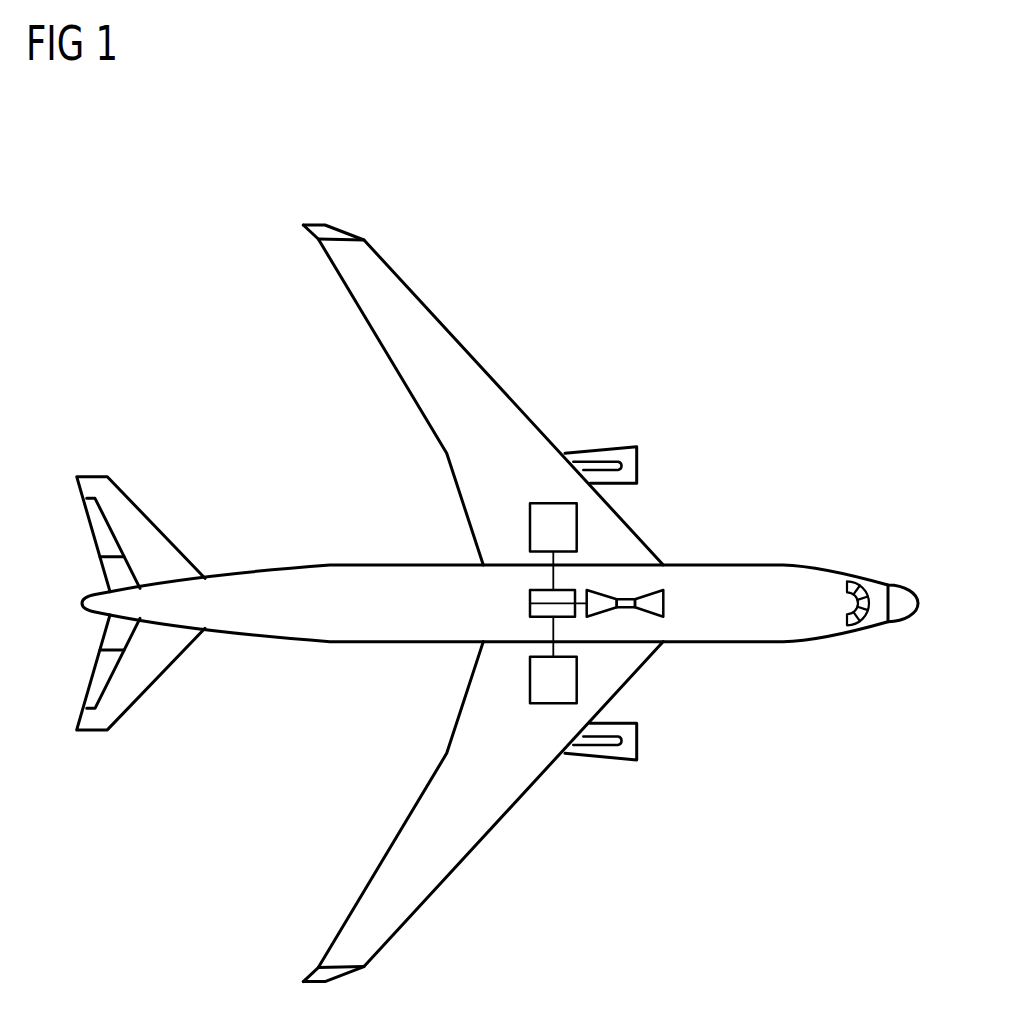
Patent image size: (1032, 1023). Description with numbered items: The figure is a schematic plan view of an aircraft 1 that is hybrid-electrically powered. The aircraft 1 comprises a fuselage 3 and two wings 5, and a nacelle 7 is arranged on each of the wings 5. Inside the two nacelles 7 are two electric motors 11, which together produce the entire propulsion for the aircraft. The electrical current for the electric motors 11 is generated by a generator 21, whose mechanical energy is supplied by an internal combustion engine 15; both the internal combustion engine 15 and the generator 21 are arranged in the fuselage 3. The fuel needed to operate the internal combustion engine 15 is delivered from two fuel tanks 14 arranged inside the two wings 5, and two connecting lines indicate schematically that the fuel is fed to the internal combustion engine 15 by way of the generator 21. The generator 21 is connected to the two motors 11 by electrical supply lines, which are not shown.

The aircraft 1 is at (731, 364).
The fuselage 3 is at (777, 643).
The wings 5 is at (486, 394).
The nacelles 7 is at (639, 463).
The electric motors 11 is at (607, 456).
The fuel tanks 14 is at (548, 523).
The internal combustion engine 15 is at (684, 601).
The generator 21 is at (511, 601).